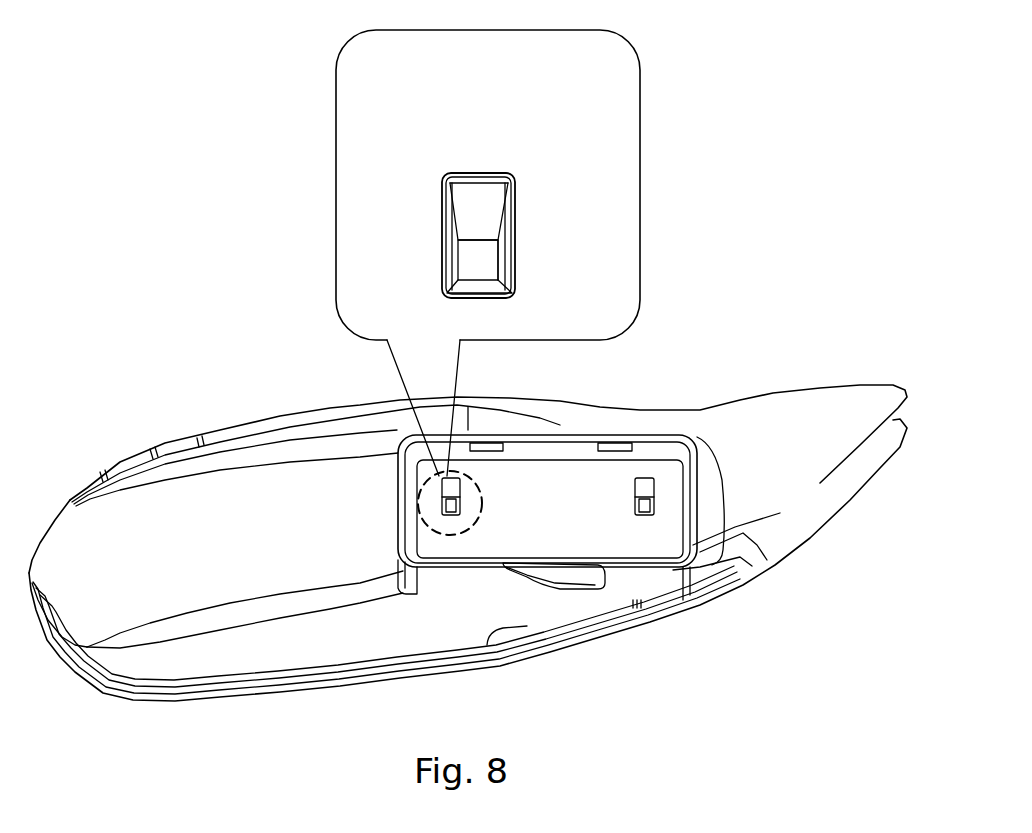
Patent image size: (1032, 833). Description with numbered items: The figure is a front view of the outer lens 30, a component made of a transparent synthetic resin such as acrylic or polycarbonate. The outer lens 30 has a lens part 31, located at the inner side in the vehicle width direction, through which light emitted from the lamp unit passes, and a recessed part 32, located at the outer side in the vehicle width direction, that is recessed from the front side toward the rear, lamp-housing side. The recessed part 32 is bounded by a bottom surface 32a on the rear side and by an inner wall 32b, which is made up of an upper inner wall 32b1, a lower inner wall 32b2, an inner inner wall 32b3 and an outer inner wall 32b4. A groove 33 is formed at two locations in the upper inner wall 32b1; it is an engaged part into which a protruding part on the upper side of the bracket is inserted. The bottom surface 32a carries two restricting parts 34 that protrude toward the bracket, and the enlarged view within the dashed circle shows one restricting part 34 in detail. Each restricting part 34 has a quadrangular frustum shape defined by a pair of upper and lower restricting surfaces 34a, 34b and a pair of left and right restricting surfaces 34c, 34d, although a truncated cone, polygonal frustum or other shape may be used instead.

The outer lens 30 is at (297, 360).
The lens part 31 is at (232, 487).
The recessed part 32 is at (547, 482).
The bottom surface 32a is at (524, 492).
The inner wall 32b is at (458, 519).
The upper inner wall 32b1 is at (551, 418).
The lower inner wall 32b2 is at (488, 562).
The inner inner wall 32b3 is at (413, 525).
The outer inner wall 32b4 is at (697, 518).
The groove 33 is at (490, 464).
The restricting part 34 is at (447, 527).
The upper restricting surface 34a is at (480, 186).
The lower restricting surface 34b is at (483, 291).
The left restricting surface 34c is at (449, 252).
The right restricting surface 34d is at (508, 258).